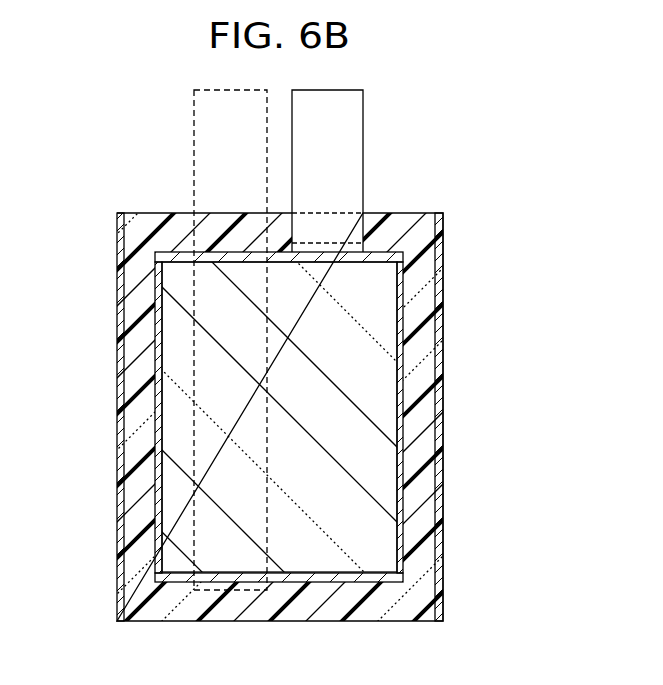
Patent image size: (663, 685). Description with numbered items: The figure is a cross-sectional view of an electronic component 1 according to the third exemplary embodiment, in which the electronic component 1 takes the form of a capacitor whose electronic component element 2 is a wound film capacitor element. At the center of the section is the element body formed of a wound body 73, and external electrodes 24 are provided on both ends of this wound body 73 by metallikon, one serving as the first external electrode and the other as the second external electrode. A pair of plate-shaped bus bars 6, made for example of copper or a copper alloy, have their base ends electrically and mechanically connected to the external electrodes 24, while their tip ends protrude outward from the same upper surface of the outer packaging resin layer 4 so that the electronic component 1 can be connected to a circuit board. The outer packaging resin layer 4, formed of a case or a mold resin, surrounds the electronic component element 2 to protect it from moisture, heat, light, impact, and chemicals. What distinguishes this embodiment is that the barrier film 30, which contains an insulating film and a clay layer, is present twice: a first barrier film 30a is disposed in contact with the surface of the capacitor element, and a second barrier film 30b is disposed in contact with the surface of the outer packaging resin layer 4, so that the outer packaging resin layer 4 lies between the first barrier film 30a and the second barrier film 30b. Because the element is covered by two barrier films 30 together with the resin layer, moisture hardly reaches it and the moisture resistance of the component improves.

The electronic component 1 is at (331, 387).
The electronic component element 2 is at (325, 400).
The outer packaging resin layer 4 is at (331, 425).
The bus bar 6 is at (207, 140).
The external electrode 24 is at (373, 255).
The barrier film 30 is at (136, 358).
The first barrier film 30a is at (403, 420).
The second barrier film 30b is at (444, 292).
The wound body 73 is at (378, 366).